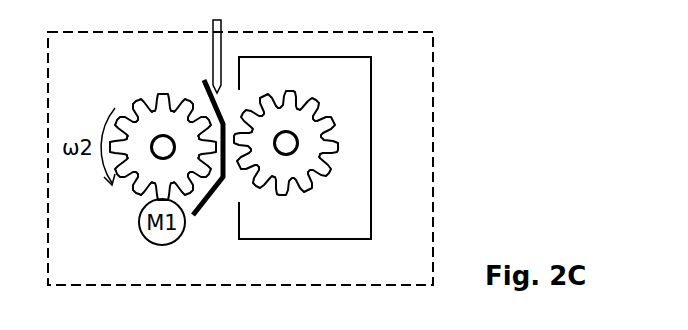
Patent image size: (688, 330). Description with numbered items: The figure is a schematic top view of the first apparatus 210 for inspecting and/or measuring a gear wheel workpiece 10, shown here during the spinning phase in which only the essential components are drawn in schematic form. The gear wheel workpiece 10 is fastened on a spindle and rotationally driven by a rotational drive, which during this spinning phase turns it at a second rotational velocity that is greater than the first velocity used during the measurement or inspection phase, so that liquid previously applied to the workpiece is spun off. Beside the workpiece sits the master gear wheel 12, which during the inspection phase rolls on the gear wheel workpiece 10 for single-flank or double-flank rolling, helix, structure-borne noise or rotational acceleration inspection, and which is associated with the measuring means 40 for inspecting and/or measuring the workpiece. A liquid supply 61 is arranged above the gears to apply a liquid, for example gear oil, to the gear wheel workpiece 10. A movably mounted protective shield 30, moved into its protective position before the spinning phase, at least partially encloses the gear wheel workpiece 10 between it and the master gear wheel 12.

The gear wheel workpiece 10 is at (146, 100).
The master gear wheel 12 is at (340, 150).
The protective shield 30 is at (207, 205).
The measuring means 40 is at (358, 85).
The liquid supply 61 is at (216, 70).
The first apparatus 210 is at (410, 272).